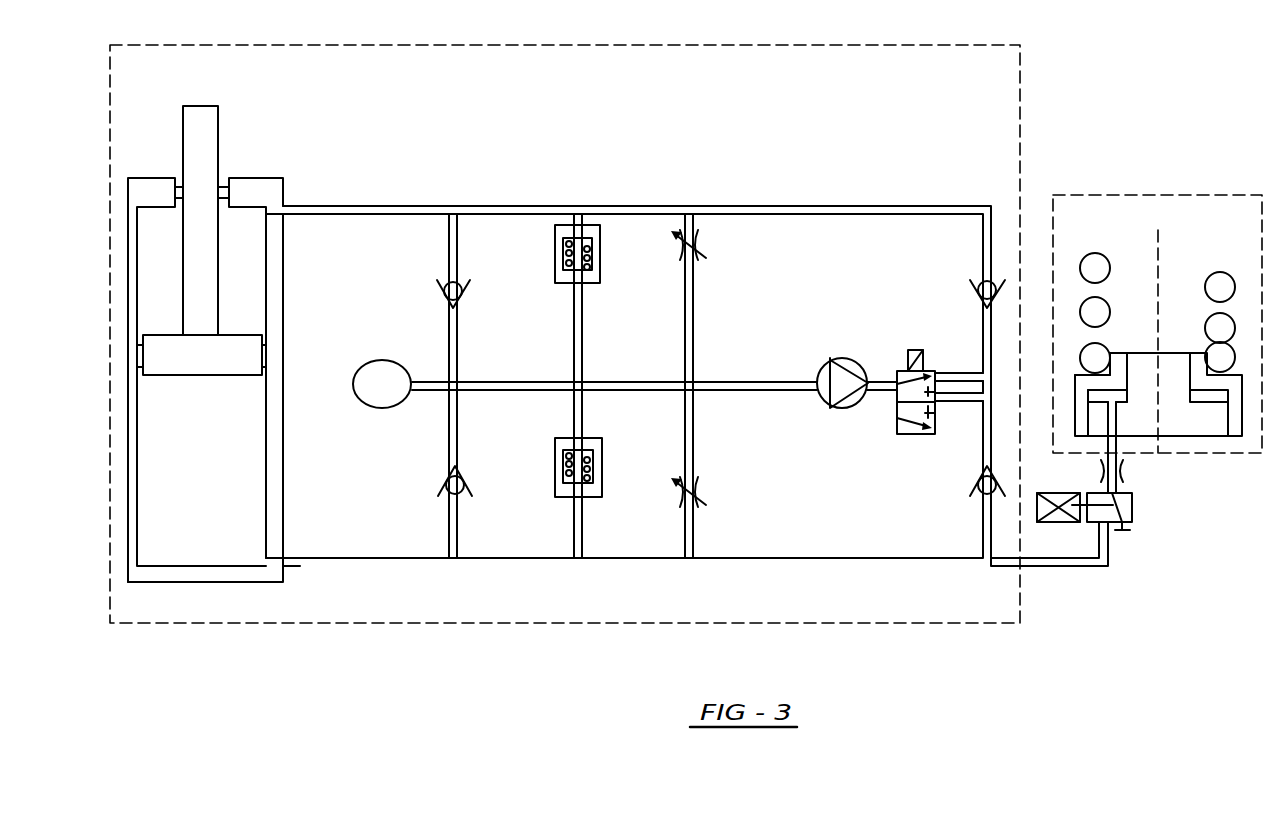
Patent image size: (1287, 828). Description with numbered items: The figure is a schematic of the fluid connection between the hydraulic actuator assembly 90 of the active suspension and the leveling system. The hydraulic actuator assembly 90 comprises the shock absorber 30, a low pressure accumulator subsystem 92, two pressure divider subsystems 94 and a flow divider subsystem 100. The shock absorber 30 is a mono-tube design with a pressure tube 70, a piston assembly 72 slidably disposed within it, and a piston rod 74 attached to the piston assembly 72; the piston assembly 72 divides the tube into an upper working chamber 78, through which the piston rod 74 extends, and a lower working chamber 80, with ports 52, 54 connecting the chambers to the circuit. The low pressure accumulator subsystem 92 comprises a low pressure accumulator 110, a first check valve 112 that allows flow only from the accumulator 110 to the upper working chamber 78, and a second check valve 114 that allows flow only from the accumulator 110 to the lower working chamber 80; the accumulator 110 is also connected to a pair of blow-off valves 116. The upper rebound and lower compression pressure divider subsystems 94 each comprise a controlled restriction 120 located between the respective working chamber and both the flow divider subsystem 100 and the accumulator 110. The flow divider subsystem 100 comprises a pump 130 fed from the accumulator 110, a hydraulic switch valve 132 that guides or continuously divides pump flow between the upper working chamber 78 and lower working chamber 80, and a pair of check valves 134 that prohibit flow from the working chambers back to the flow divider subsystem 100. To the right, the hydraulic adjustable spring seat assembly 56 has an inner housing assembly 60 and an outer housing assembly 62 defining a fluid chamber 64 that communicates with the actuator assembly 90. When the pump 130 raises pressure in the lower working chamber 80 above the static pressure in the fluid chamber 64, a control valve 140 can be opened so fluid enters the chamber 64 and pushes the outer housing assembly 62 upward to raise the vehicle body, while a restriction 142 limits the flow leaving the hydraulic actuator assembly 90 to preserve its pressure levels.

The shock absorber 30 is at (122, 435).
The first port 52 is at (285, 205).
The second port 54 is at (284, 567).
The hydraulic adjustable spring seat assembly 56 is at (1210, 476).
The inner housing assembly 60 is at (1200, 415).
The outer housing assembly 62 is at (1078, 381).
The fluid chamber 64 is at (1092, 395).
The pressure tube 70 is at (128, 386).
The piston assembly 72 is at (172, 352).
The piston rod 74 is at (208, 128).
The upper working chamber 78 is at (168, 270).
The lower working chamber 80 is at (192, 503).
The hydraulic actuator assembly 90 is at (156, 151).
The low pressure accumulator subsystem 92 is at (337, 292).
The pressure divider subsystem 94 is at (722, 250).
The flow divider subsystem 100 is at (876, 337).
The low pressure accumulator 110 is at (382, 410).
The first check valve 112 is at (447, 300).
The second check valve 114 is at (448, 480).
The blow-off valve 116 is at (555, 255).
The controlled restriction 120 is at (682, 250).
The pump 130 is at (842, 408).
The hydraulic switch valve 132 is at (914, 434).
The check valve 134 is at (976, 288).
The control valve 140 is at (1135, 510).
The restriction 142 is at (1125, 469).